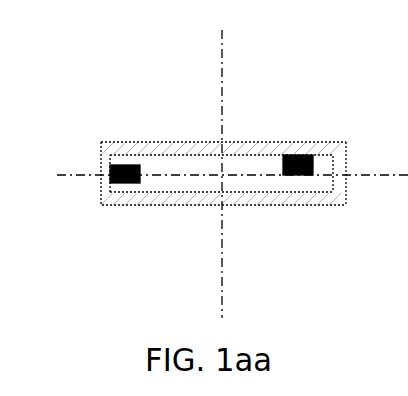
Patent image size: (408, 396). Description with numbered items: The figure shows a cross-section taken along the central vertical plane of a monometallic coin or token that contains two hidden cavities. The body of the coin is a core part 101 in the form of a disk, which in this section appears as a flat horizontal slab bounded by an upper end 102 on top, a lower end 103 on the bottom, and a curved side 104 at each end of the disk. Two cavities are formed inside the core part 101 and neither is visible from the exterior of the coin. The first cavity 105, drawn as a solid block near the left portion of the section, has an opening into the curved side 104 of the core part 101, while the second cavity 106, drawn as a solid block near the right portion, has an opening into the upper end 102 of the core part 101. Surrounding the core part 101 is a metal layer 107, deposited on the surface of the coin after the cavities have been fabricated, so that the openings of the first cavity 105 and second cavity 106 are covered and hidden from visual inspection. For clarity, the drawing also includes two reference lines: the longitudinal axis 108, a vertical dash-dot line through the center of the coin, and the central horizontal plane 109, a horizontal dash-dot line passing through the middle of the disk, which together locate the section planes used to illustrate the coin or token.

The core part 101 is at (205, 178).
The upper end 102 is at (240, 155).
The lower end 103 is at (232, 192).
The curved side 104 is at (333, 188).
The first cavity 105 is at (130, 185).
The second cavity 106 is at (300, 178).
The metal layer 107 is at (110, 205).
The longitudinal axis 108 is at (226, 164).
The central horizontal plane 109 is at (209, 177).